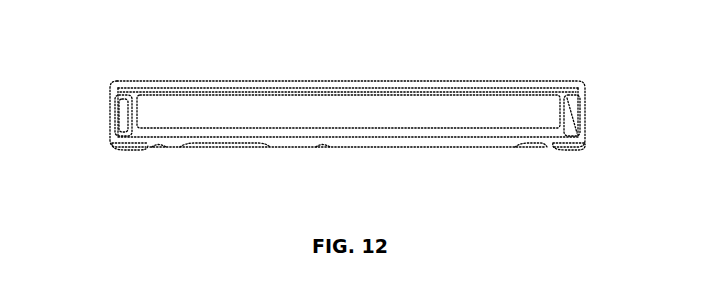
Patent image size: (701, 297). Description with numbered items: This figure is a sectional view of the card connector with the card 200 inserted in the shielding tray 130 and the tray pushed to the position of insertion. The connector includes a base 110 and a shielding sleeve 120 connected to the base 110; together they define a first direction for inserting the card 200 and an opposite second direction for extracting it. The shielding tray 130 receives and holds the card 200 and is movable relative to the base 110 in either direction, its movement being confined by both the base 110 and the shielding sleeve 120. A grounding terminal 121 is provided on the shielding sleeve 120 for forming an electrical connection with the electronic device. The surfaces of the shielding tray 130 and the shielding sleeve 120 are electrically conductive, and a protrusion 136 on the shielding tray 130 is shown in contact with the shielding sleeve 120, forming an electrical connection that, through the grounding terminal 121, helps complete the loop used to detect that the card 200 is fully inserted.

The base 110 is at (400, 141).
The shielding sleeve 120 is at (458, 80).
The grounding terminal 121 is at (135, 150).
The shielding tray 130 is at (153, 92).
The protrusion 136 is at (112, 100).
The card 200 is at (338, 108).